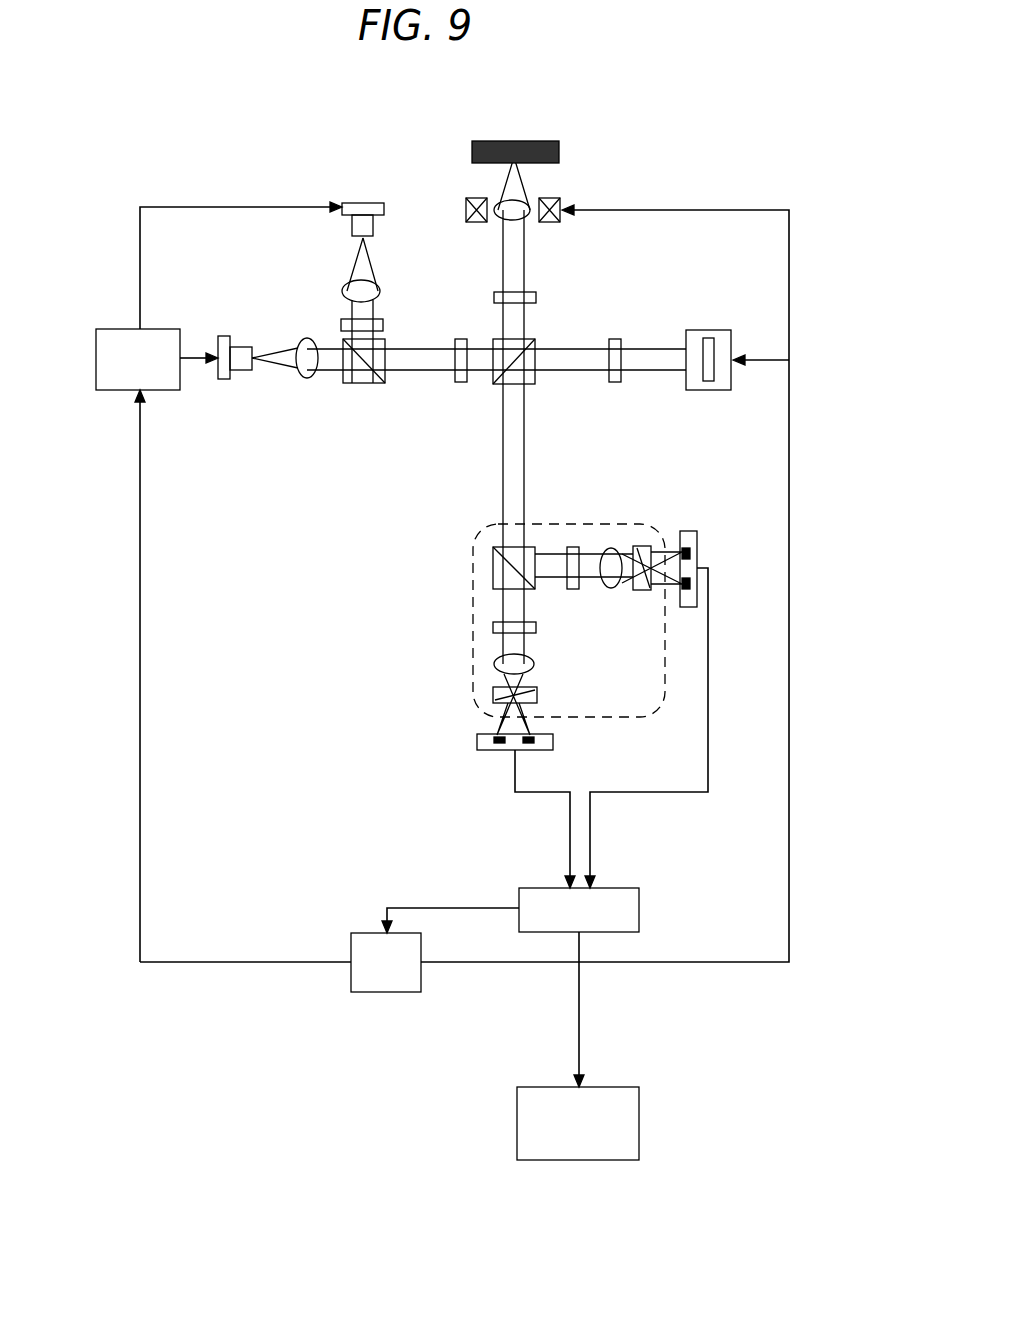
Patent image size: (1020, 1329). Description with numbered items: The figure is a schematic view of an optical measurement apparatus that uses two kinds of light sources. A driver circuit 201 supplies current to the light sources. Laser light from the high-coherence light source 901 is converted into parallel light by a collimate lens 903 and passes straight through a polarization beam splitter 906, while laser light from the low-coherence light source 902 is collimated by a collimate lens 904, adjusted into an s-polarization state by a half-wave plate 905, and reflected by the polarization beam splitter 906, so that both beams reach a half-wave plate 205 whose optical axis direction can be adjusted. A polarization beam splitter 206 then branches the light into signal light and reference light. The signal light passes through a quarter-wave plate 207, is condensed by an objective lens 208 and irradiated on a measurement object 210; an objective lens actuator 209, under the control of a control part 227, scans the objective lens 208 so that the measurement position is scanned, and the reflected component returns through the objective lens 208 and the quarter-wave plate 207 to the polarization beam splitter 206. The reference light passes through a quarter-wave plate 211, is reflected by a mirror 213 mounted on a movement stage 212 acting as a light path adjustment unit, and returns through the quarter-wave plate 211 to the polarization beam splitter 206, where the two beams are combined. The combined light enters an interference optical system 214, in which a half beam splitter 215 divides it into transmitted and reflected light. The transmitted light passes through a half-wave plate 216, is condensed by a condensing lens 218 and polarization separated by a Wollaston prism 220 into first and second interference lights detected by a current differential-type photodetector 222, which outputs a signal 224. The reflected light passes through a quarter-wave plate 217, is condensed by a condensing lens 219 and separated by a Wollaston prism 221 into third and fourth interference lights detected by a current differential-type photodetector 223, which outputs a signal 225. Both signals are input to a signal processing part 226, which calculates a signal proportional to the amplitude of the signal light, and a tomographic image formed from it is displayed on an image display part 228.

The driver circuit 201 is at (96, 355).
The high-coherence light source 901 is at (241, 379).
The low-coherence light source 902 is at (357, 203).
The collimate lens 903 is at (297, 347).
The collimate lens 904 is at (343, 283).
The λ/2 plate 905 is at (342, 320).
The polarization beam splitter 906 is at (363, 384).
The λ/2 plate 205 is at (460, 384).
The polarization beam splitter 206 is at (493, 342).
The λ/4 plate 207 is at (494, 297).
The objective lens 208 is at (530, 219).
The objective lens actuator 209 is at (562, 202).
The measurement object 210 is at (472, 150).
The λ/4 plate 211 is at (615, 339).
The movement stage 212 is at (700, 330).
The mirror 213 is at (713, 338).
The interference optical system 214 is at (665, 650).
The half beam splitter 215 is at (492, 568).
The λ/2 plate 216 is at (537, 625).
The λ/4 plate 217 is at (571, 547).
The condensing lens 218 is at (533, 665).
The condensing lens 219 is at (608, 552).
The Wollaston prism 220 is at (537, 693).
The Wollaston prism 221 is at (643, 547).
The current differential-type photodetector 222 is at (555, 742).
The current differential-type photodetector 223 is at (693, 531).
The signal 224 is at (518, 768).
The signal 225 is at (708, 588).
The signal processing part 226 is at (531, 888).
The control part 227 is at (358, 994).
The image display part 228 is at (639, 1124).